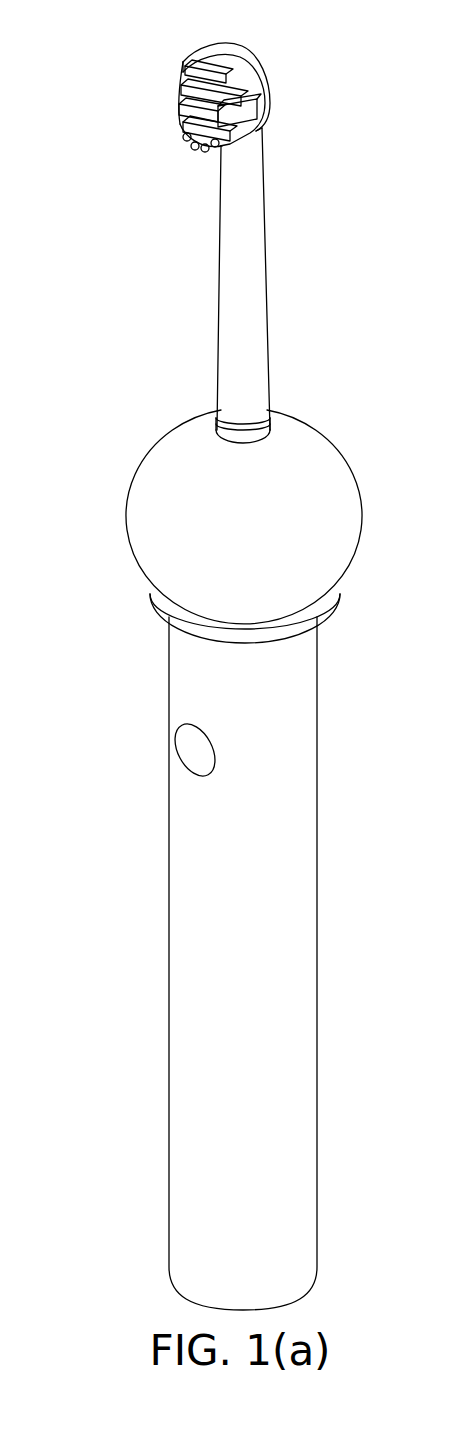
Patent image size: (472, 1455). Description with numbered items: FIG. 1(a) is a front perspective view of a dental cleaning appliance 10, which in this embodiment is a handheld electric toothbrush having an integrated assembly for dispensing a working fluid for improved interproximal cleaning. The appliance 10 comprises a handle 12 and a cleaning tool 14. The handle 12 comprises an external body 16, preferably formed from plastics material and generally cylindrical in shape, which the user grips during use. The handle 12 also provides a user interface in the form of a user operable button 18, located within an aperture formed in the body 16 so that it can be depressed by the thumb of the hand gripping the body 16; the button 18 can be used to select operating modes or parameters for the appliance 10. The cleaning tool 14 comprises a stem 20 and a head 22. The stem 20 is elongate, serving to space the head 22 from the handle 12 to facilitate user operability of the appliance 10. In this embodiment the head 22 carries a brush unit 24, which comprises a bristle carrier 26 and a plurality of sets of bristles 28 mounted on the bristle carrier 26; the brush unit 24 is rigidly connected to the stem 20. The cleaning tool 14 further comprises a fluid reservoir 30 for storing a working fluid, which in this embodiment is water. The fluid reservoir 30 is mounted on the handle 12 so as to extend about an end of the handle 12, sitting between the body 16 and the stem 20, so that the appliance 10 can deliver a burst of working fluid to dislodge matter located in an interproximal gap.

The dental cleaning appliance 10 is at (100, 418).
The handle 12 is at (329, 900).
The cleaning tool 14 is at (205, 305).
The external body 16 is at (305, 1048).
The user operable button 18 is at (185, 748).
The stem 20 is at (256, 263).
The head 22 is at (280, 70).
The brush unit 24 is at (160, 56).
The bristle carrier 26 is at (228, 48).
The bristles 28 is at (243, 113).
The fluid reservoir 30 is at (138, 541).